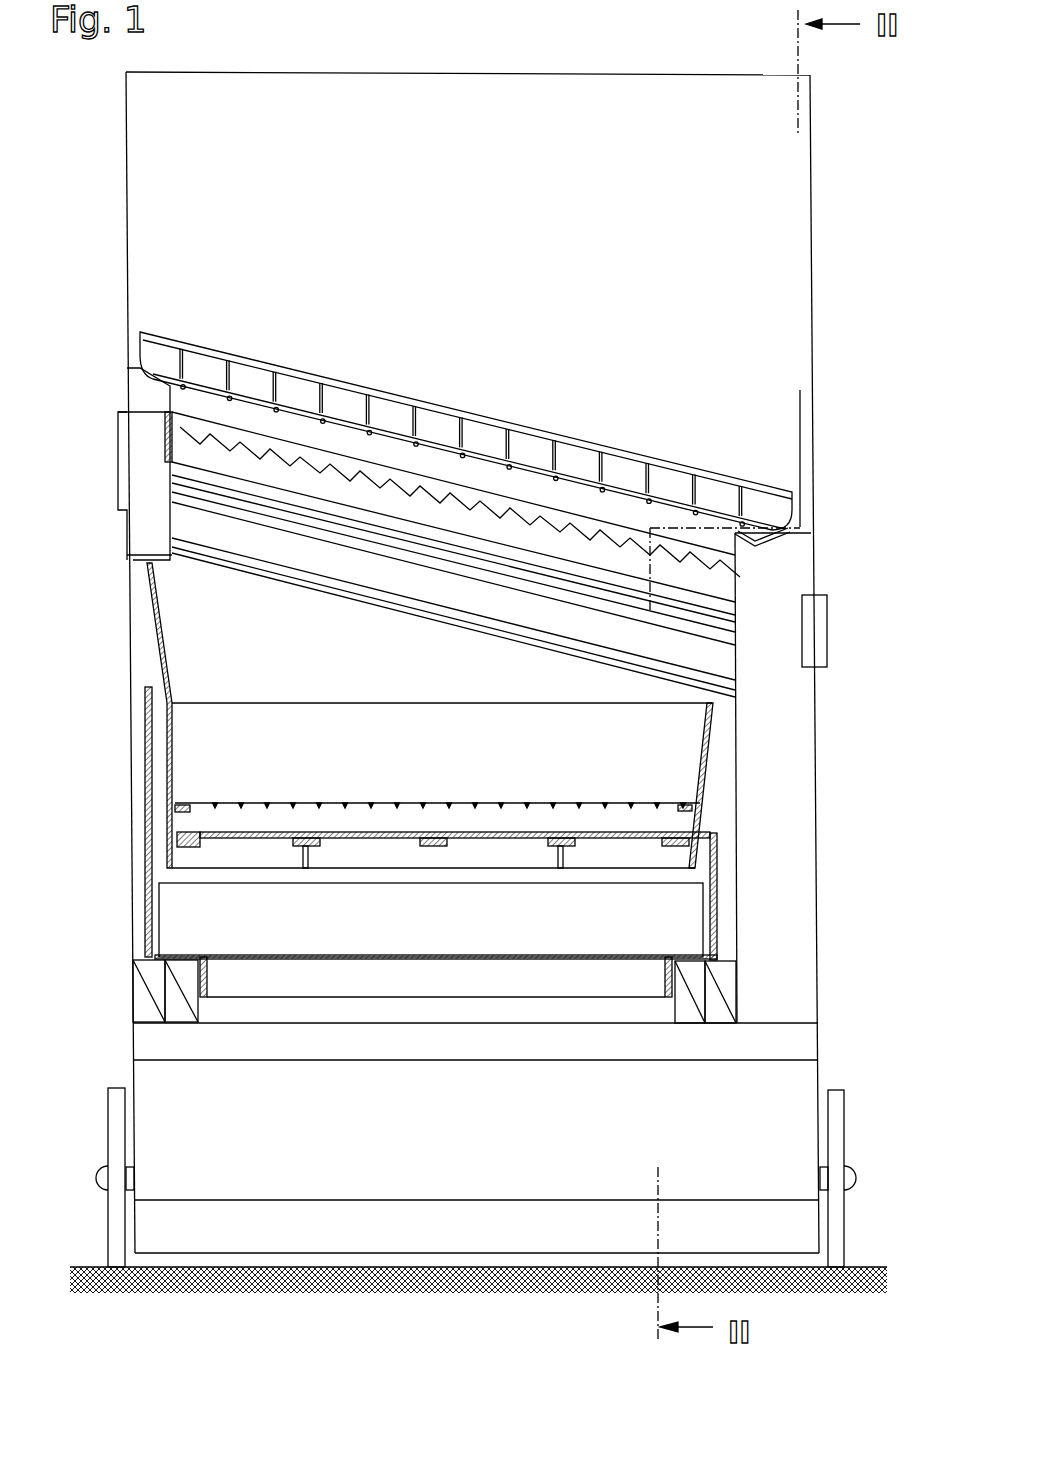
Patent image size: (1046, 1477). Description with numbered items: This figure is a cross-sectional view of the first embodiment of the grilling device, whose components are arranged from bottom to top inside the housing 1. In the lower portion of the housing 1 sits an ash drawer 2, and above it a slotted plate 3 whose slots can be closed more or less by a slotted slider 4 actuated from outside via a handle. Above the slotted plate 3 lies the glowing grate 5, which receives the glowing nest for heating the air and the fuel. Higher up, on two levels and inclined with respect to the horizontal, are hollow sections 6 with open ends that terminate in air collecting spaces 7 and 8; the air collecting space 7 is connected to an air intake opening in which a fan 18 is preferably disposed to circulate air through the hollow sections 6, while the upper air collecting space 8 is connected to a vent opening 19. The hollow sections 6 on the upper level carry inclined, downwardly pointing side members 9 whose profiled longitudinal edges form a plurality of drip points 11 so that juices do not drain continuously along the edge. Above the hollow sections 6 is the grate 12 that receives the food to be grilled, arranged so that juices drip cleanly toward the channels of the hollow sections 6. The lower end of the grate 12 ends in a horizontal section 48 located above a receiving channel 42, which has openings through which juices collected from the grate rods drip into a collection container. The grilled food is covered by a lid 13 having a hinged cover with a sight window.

The housing 1 is at (838, 1058).
The ash drawer 2 is at (692, 940).
The slotted plate 3 is at (648, 828).
The slotted slider 4 is at (612, 840).
The glowing grate 5 is at (648, 800).
The hollow sections 6 is at (708, 595).
The air collecting space 7 is at (788, 708).
The air collecting space 8 is at (150, 397).
The side members 9 is at (195, 427).
The drip points 11 is at (255, 455).
The grate 12 is at (620, 448).
The lid 13 is at (230, 140).
The fan 18 is at (820, 612).
The vent opening 19 is at (117, 498).
The receiving channel 42 is at (755, 540).
The horizontal section 48 is at (763, 483).